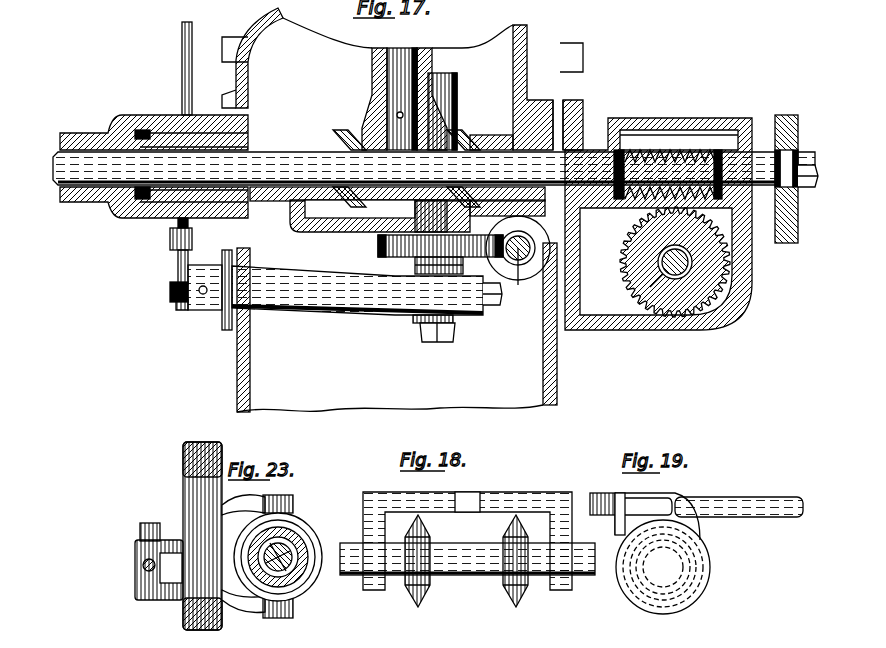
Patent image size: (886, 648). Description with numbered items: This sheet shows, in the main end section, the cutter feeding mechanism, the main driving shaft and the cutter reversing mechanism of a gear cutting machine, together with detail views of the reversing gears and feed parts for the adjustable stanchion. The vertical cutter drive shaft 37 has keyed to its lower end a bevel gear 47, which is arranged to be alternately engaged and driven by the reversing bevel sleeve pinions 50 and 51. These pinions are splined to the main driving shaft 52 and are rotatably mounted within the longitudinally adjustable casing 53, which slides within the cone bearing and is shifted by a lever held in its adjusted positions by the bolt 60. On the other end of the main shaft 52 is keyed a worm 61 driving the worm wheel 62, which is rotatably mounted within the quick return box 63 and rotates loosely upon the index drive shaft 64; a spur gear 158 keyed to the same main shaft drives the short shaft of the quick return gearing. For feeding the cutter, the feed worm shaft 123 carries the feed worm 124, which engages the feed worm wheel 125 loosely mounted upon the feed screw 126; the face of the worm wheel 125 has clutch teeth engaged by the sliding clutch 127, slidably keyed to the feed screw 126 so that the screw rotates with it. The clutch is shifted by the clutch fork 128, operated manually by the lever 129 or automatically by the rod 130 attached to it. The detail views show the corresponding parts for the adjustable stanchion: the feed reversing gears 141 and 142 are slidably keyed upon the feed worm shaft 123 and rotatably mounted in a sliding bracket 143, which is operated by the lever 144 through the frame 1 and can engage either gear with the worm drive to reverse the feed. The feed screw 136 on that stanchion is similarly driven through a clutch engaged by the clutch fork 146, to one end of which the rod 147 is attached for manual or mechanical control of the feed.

In FIG. 17, the frame 1 is at (560, 371).
In FIG. 17, the vertical cutter drive shaft 37 is at (398, 48).
In FIG. 17, the bevel gear 47 is at (362, 128).
In FIG. 17, the reversing bevel sleeve pinion 50 is at (456, 140).
In FIG. 17, the reversing bevel sleeve pinion 51 is at (355, 197).
In FIG. 17, the main driving shaft 52 is at (72, 177).
In FIG. 17, the longitudinally adjustable casing 53 is at (320, 206).
In FIG. 17, the bolt 60 is at (170, 243).
In FIG. 17, the worm 61 is at (683, 150).
In FIG. 17, the worm wheel 62 is at (622, 263).
In FIG. 17, the quick return box 63 is at (749, 275).
In FIG. 17, the index drive shaft 64 is at (640, 290).
In FIG. 17, the feed worm shaft 123 is at (520, 265).
In FIG. 18, the feed worm shaft 123 is at (580, 578).
In FIG. 19, the feed worm shaft 123 is at (652, 574).
In FIG. 17, the feed worm 124 is at (518, 236).
In FIG. 17, the feed worm wheel 125 is at (378, 247).
In FIG. 17, the feed screw 126 is at (458, 86).
In FIG. 17, the sliding clutch 127 is at (415, 268).
In FIG. 17, the clutch fork 128 is at (478, 314).
In FIG. 17, the lever 129 is at (206, 312).
In FIG. 17, the rod 130 is at (193, 33).
In FIG. 23, the screw 136 is at (290, 550).
In FIG. 18, the feed reversing gear 141 is at (516, 600).
In FIG. 18, the feed reversing gear 142 is at (411, 600).
In FIG. 18, the sliding bracket 143 is at (506, 500).
In FIG. 19, the sliding bracket 143 is at (688, 527).
In FIG. 19, the lever 144 is at (746, 505).
In FIG. 23, the clutch fork 146 is at (260, 606).
In FIG. 23, the rod 147 is at (141, 566).
In FIG. 17, the spur gear 158 is at (781, 118).